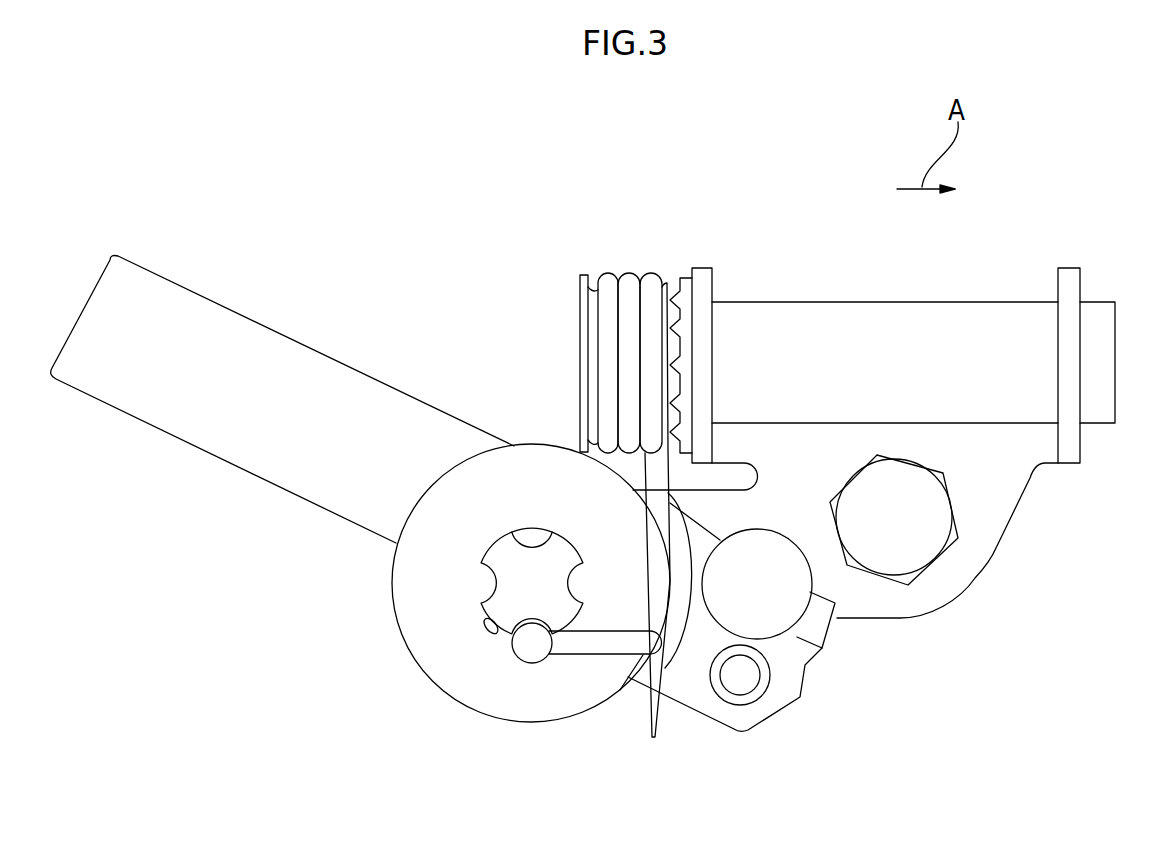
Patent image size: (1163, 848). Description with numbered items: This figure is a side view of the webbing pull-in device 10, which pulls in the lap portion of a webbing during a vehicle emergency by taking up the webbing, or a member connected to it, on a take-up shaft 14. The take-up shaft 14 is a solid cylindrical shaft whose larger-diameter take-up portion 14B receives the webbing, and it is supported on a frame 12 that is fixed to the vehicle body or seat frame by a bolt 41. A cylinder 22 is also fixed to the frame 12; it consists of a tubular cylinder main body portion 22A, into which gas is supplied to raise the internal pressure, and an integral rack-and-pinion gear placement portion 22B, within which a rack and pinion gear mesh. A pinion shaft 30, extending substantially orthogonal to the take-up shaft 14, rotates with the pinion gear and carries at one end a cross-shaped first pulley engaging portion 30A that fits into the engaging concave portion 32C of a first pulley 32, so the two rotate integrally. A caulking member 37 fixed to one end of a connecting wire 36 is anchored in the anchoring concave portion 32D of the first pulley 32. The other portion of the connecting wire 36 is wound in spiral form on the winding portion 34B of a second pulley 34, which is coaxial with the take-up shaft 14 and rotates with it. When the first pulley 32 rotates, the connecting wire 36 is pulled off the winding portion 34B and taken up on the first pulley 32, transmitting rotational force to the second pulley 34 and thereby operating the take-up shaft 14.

The webbing pull-in device 10 is at (442, 165).
The frame 12 is at (1000, 537).
The take-up shaft 14 is at (805, 300).
The take-up portion 14B is at (995, 300).
The cylinder 22 is at (208, 298).
The cylinder main body portion 22A is at (268, 328).
The rack-and-pinion gear placement portion 22B is at (710, 728).
The pinion shaft 30 is at (500, 560).
The first pulley engaging portion 30A is at (510, 600).
The first pulley 32 is at (502, 722).
The engaging concave portion 32C is at (497, 632).
The anchoring concave portion 32D is at (517, 657).
The second pulley 34 is at (578, 273).
The winding portion 34B is at (668, 282).
The connecting wire 36 is at (658, 695).
The caulking member 37 is at (540, 656).
The bolt 41 is at (923, 540).